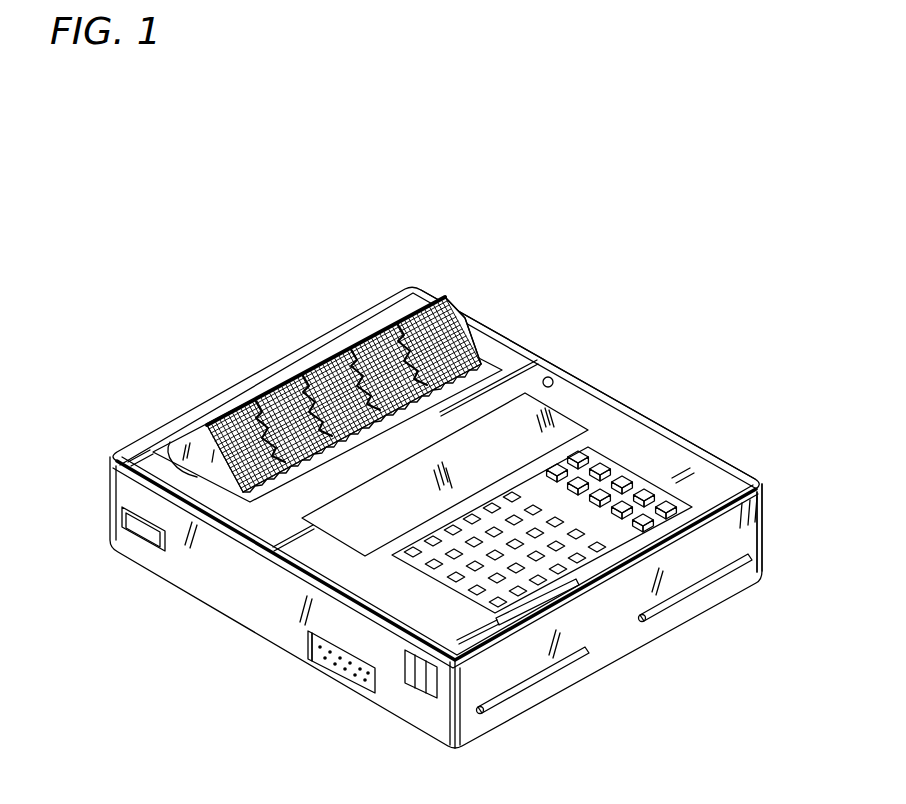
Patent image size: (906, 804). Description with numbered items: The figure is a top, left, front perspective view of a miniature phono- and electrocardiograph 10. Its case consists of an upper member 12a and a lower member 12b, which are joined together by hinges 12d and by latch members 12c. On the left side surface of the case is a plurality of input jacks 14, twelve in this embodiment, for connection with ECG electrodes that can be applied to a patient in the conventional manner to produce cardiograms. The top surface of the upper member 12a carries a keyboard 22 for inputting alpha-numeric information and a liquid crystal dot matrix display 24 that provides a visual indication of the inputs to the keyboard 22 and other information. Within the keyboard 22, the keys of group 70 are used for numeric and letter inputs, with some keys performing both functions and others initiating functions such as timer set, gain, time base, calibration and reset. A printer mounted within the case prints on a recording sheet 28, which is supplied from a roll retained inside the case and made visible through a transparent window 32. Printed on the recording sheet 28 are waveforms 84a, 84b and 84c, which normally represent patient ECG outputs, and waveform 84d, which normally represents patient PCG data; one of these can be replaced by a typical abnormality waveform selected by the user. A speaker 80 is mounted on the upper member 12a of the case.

The phono- and electrocardiograph 10 is at (533, 338).
The upper member 12a is at (670, 428).
The lower member 12b is at (752, 587).
The latch members 12c is at (147, 540).
The hinges 12d is at (647, 622).
The input jacks 14 is at (338, 683).
The keyboard 22 is at (420, 586).
The liquid crystal dot matrix display 24 is at (547, 420).
The recording sheet 28 is at (420, 300).
The transparent window 32 is at (185, 440).
The group of keys 70 is at (580, 590).
The speaker 80 is at (407, 667).
The waveform 84a is at (257, 402).
The waveform 84b is at (313, 365).
The waveform 84c is at (362, 330).
The waveform 84d is at (413, 303).